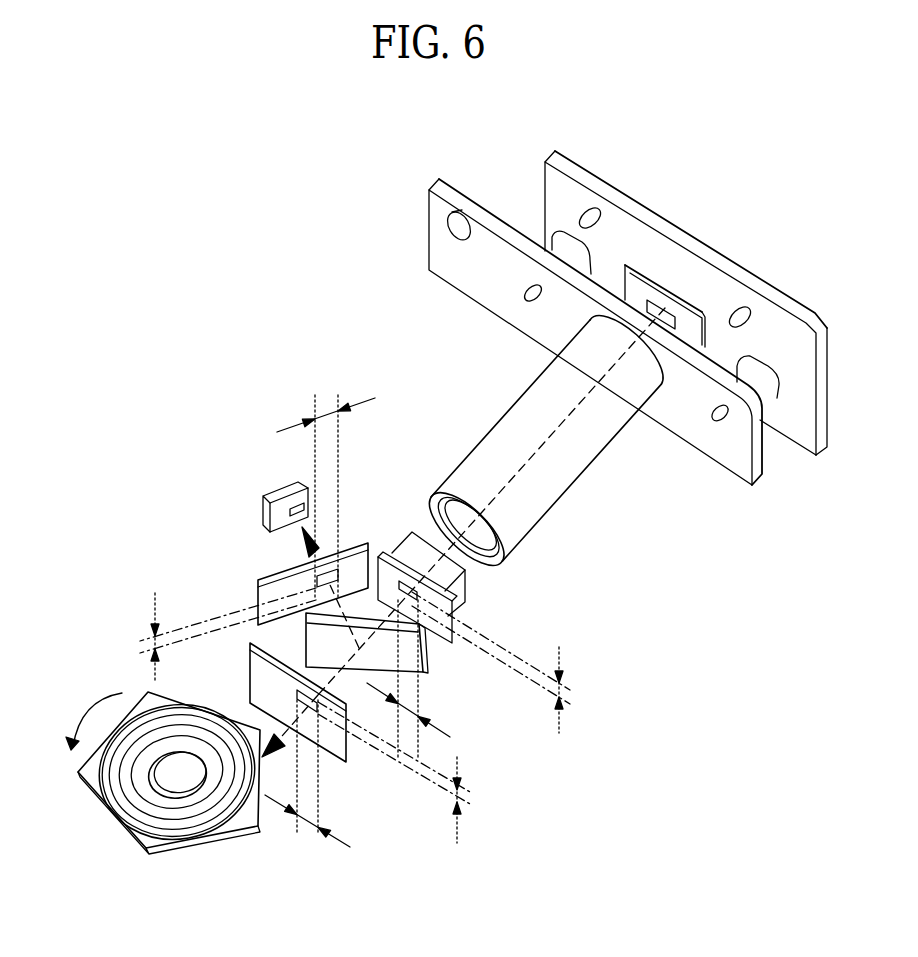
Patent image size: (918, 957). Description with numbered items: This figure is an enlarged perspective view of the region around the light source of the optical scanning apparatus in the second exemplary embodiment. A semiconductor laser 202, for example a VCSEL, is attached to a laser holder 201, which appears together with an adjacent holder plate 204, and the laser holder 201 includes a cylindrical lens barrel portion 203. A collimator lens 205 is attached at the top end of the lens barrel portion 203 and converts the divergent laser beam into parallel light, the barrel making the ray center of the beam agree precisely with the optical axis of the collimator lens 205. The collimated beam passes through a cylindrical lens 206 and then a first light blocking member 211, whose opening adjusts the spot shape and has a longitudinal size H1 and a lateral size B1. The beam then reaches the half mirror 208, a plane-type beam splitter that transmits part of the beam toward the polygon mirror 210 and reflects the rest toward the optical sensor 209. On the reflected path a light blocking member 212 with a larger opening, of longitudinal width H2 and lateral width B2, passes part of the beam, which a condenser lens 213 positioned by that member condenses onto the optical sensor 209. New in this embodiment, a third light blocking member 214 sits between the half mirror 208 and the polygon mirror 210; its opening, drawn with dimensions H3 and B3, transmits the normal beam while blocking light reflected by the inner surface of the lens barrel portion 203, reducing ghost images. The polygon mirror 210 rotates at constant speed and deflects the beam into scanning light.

The laser holder 201 is at (431, 246).
The semiconductor laser 202 is at (675, 290).
The lens barrel portion 203 is at (540, 446).
The rear holding plate 204 is at (762, 287).
The collimator lens 205 is at (494, 530).
The cylindrical lens 206 is at (458, 592).
The half mirror 208 is at (427, 657).
The optical sensor 209 is at (263, 498).
The polygon mirror 210 is at (142, 833).
The light blocking member 211 is at (442, 644).
The light blocking member 212 is at (257, 620).
The condenser lens 213 is at (300, 558).
The third light blocking member 214 is at (336, 753).
The lateral opening size of first light blocking member B1 is at (408, 680).
The lateral opening width of second light blocking member B2 is at (326, 487).
The slit width B3 is at (307, 783).
The longitudinal opening size of first light blocking member H1 is at (577, 690).
The longitudinal opening width of second light blocking member H2 is at (134, 637).
The beam height H3 is at (473, 800).